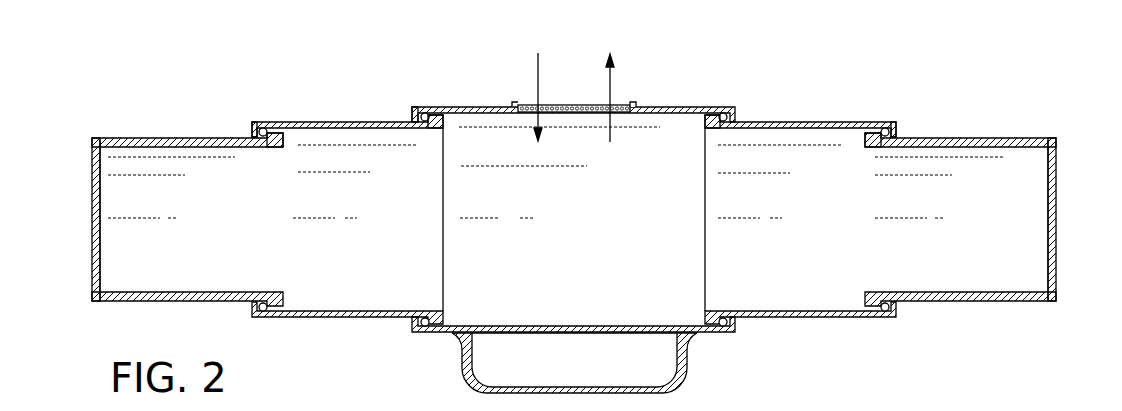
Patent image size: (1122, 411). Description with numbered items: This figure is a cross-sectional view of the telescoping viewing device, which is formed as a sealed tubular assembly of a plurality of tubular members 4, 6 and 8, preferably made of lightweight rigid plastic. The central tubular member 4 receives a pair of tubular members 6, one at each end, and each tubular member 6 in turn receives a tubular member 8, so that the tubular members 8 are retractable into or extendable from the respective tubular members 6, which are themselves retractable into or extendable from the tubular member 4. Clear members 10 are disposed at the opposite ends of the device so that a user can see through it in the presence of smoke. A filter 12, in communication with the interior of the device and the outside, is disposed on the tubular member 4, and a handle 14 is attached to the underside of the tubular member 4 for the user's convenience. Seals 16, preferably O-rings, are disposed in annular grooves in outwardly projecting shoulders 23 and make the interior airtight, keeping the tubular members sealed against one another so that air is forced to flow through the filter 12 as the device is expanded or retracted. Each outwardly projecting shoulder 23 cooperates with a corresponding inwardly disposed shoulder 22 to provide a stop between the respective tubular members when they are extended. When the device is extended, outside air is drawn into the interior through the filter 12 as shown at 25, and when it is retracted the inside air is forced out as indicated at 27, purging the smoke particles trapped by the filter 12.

The tubular member 4 is at (472, 107).
The tubular member 6 is at (325, 122).
The tubular member 8 is at (148, 138).
The clear member 10 is at (97, 202).
The filter 12 is at (572, 105).
The handle 14 is at (687, 363).
The seal 16 is at (263, 128).
The inwardly disposed shoulder 22 is at (252, 132).
The outwardly projecting shoulder 23 is at (283, 143).
The air drawn in 25 is at (538, 86).
The air forced out 27 is at (612, 90).